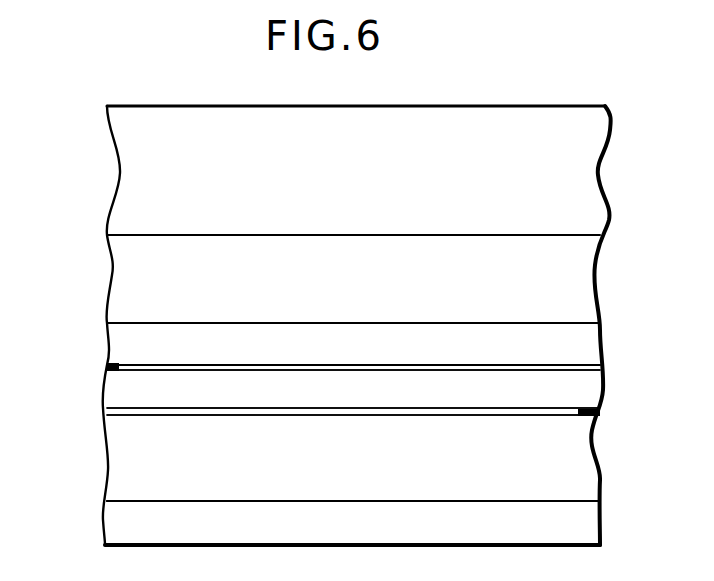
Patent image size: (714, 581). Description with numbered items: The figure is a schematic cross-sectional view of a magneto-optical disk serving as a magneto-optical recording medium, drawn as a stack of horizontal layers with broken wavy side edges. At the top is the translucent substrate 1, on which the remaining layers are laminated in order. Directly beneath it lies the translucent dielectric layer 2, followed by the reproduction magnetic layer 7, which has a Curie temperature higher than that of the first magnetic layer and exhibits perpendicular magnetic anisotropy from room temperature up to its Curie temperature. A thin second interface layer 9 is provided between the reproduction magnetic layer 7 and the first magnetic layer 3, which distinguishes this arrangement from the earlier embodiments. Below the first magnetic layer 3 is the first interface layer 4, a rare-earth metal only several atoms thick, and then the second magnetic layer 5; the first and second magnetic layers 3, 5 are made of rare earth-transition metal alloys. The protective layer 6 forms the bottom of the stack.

The translucent substrate 1 is at (585, 170).
The translucent dielectric layer 2 is at (576, 270).
The reproduction magnetic layer 7 is at (580, 340).
The second interface layer 9 is at (107, 366).
The first magnetic layer 3 is at (578, 396).
The first interface layer 4 is at (598, 416).
The second magnetic layer 5 is at (578, 483).
The protective layer 6 is at (578, 527).